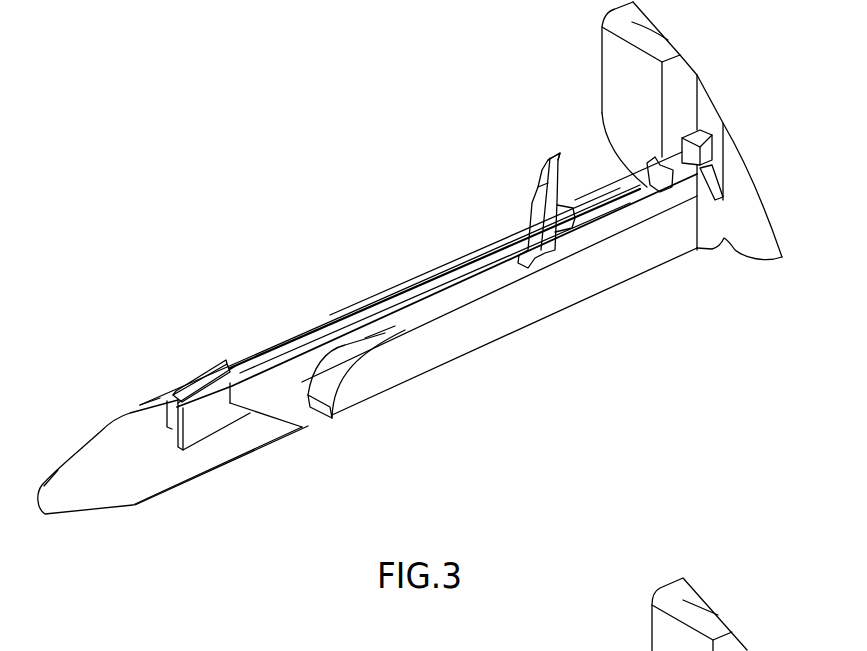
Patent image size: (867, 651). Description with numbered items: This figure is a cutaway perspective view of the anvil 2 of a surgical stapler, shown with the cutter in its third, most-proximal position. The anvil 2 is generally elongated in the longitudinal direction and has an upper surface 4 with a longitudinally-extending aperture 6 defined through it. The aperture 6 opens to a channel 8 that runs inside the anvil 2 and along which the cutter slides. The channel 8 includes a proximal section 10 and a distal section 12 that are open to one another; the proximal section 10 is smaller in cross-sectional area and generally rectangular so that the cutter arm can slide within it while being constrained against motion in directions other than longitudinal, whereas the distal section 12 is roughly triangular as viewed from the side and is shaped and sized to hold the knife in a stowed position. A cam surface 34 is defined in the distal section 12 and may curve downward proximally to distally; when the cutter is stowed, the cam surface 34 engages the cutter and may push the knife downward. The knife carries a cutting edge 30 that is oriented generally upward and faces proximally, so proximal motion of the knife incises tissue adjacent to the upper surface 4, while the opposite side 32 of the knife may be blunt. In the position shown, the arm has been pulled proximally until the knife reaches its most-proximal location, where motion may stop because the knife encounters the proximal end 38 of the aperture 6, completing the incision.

The anvil 2 is at (124, 512).
The upper surface 4 is at (202, 372).
The aperture 6 is at (287, 345).
The channel 8 is at (410, 335).
The proximal section 10 is at (368, 358).
The distal section 12 is at (315, 430).
The cutting edge 30 is at (566, 200).
The opposite side 32 is at (530, 213).
The cam surface 34 is at (385, 333).
The proximal end 38 is at (572, 207).